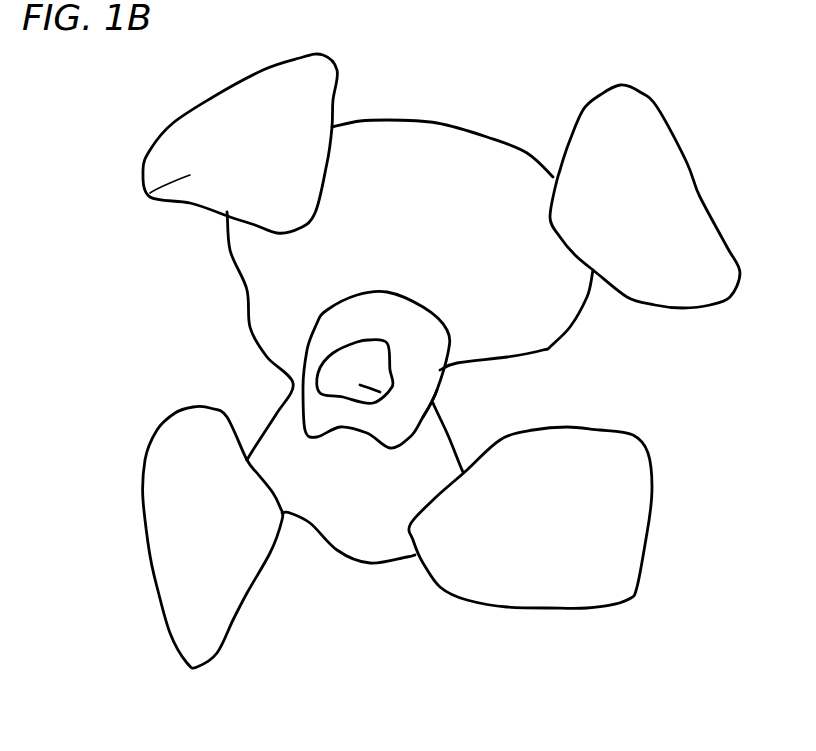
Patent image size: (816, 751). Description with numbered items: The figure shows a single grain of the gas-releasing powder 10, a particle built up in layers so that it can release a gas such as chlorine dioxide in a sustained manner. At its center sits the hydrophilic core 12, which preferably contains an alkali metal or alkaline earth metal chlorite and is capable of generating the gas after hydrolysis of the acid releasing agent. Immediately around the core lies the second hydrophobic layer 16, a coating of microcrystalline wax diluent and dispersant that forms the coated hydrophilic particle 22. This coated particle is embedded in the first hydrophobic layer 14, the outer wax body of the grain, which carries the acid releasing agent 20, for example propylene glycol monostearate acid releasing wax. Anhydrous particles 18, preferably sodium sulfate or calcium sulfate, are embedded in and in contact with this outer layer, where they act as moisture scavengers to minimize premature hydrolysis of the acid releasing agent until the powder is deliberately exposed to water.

The implant device 10 is at (548, 87).
The central opening 12 is at (358, 385).
The body 14 is at (553, 317).
The inner wall 16 is at (327, 365).
The lobes 18 is at (147, 195).
The recess 20 is at (410, 373).
The raised rim 22 is at (327, 312).